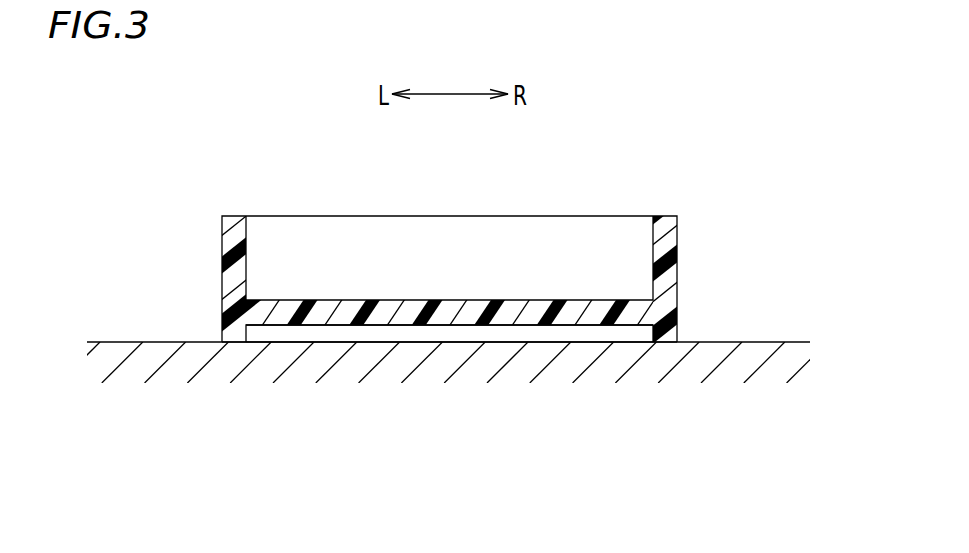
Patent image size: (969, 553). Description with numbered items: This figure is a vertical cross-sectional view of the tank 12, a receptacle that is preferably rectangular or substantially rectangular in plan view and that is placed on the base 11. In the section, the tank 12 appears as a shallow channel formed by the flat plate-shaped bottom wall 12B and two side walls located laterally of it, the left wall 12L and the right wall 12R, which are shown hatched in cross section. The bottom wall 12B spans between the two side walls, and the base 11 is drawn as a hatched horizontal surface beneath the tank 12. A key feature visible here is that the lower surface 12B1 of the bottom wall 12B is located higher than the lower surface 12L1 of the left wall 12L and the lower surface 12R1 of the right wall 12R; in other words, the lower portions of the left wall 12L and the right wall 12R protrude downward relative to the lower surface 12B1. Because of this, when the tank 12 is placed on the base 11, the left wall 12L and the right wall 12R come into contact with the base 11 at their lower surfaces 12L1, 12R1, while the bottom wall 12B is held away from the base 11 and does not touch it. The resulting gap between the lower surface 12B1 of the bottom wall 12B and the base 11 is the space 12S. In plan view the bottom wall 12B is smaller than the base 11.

The base 11 is at (742, 342).
The tank 12 is at (449, 274).
The left wall 12L is at (232, 243).
The right wall 12R is at (670, 238).
The bottom wall 12B is at (382, 312).
The space 12S is at (455, 342).
The lower surface of the left wall 12L1 is at (236, 343).
The lower surface of the right wall 12R1 is at (665, 343).
The lower surface of the bottom wall 12B1 is at (585, 326).